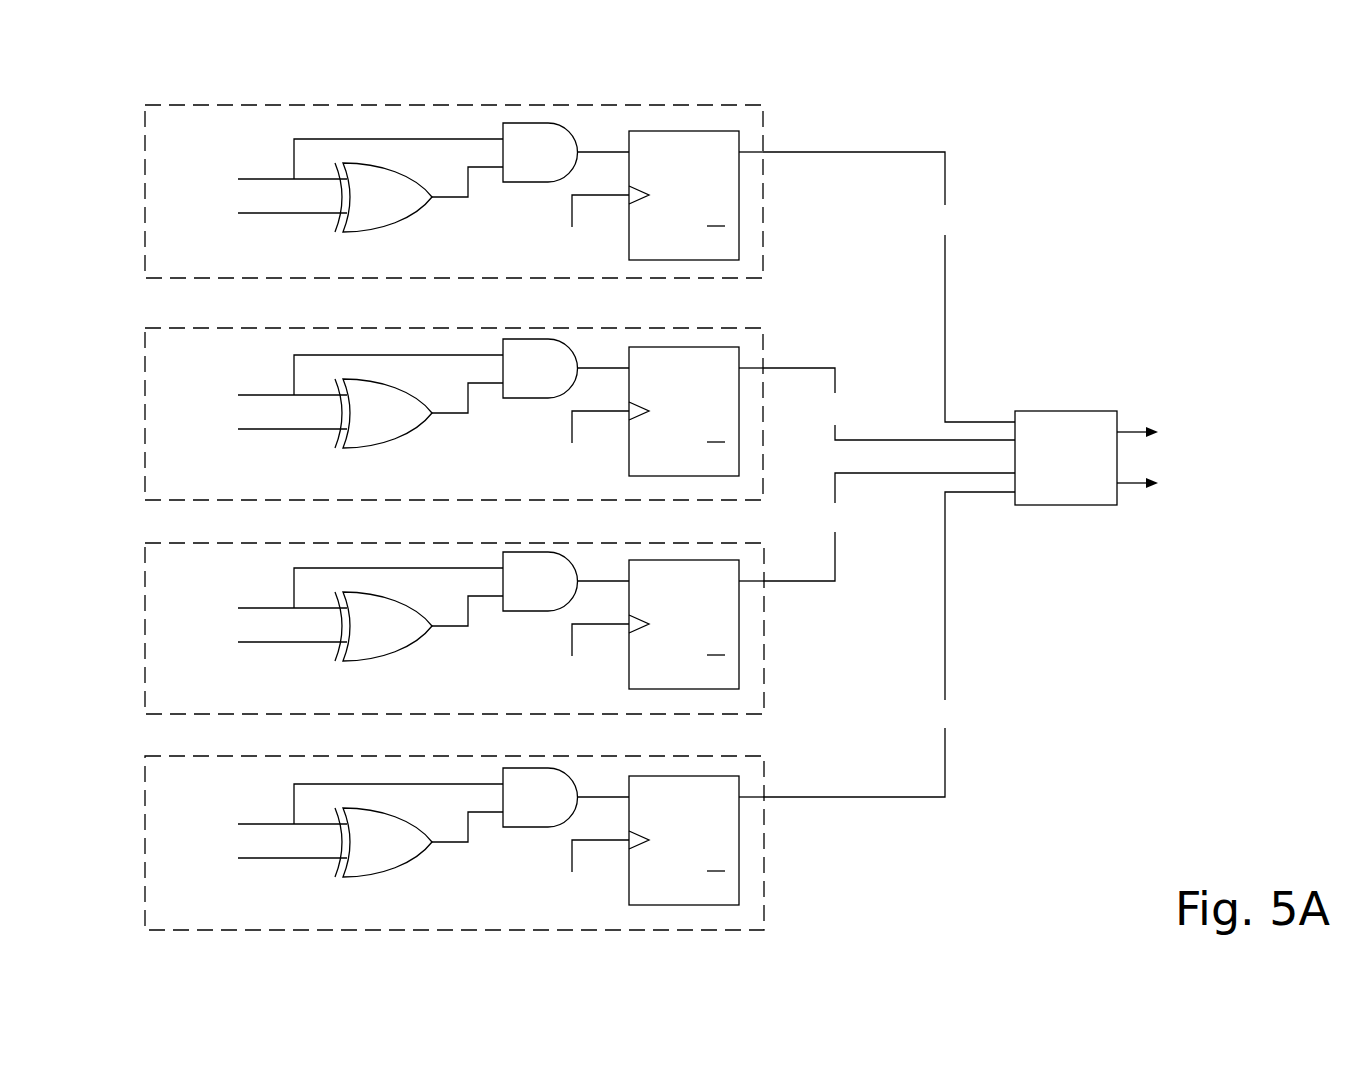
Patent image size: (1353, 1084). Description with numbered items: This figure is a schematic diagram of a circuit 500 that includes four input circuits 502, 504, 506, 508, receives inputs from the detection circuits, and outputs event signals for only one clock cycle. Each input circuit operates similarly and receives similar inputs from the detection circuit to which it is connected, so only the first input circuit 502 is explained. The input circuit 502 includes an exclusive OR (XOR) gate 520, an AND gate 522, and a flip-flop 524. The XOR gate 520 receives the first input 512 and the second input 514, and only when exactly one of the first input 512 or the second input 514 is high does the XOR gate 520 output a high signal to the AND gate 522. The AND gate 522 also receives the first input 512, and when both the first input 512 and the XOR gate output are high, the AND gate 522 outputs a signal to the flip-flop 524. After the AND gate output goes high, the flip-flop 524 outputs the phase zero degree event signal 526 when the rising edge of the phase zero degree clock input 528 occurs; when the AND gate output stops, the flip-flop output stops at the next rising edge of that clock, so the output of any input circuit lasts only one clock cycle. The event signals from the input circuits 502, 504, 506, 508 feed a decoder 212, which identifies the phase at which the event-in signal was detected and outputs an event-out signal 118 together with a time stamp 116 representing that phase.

The circuit 500 is at (1204, 155).
The input circuit 502 is at (765, 131).
The input circuit 504 is at (765, 346).
The input circuit 506 is at (766, 668).
The input circuit 508 is at (766, 887).
The A(2) input 512 is at (152, 175).
The A(3) input 514 is at (152, 212).
The exclusive OR (XOR) gate 520 is at (365, 163).
The AND gate 522 is at (537, 123).
The flip-flop 524 is at (683, 131).
The Phase 0° event signal 526 is at (990, 186).
The phase 0° clock input 528 is at (512, 252).
The decoder 212 is at (1067, 411).
The event-out signal 118 is at (1218, 407).
The time stamp 116 is at (1240, 507).